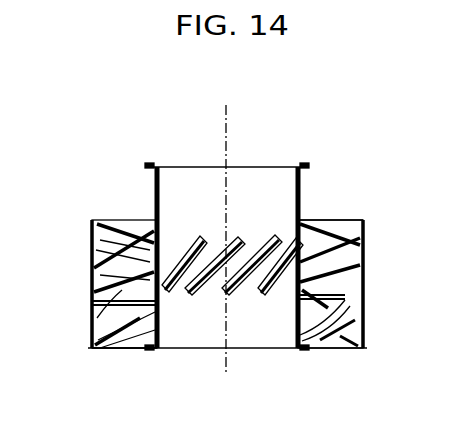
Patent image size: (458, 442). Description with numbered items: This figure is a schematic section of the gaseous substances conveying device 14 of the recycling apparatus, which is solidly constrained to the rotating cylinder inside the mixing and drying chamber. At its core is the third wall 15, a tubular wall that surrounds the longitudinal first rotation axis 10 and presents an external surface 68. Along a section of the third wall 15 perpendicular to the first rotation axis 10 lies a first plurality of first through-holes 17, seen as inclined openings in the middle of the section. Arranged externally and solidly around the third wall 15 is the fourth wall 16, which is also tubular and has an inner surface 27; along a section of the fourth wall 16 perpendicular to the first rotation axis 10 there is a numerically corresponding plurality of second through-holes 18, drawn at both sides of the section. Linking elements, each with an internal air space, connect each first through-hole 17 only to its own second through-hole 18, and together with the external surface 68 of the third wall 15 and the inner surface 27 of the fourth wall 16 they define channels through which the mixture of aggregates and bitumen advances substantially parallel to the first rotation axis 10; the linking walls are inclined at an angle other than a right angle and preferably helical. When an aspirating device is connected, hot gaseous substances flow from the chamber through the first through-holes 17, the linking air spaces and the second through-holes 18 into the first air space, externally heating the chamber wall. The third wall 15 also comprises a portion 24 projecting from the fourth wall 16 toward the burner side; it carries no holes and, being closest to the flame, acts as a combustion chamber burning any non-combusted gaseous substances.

The first rotation axis 10 is at (228, 138).
The gaseous substances conveying device 14 is at (355, 150).
The third wall 15 is at (150, 165).
The fourth wall 16 is at (91, 350).
The first through-holes 17 is at (192, 229).
The second through-holes 18 is at (92, 252).
The portion of the third wall 24 is at (345, 196).
The inner surface 27 is at (365, 247).
The external surface 68 is at (302, 203).